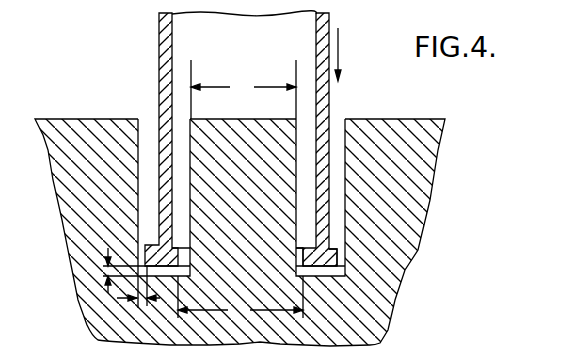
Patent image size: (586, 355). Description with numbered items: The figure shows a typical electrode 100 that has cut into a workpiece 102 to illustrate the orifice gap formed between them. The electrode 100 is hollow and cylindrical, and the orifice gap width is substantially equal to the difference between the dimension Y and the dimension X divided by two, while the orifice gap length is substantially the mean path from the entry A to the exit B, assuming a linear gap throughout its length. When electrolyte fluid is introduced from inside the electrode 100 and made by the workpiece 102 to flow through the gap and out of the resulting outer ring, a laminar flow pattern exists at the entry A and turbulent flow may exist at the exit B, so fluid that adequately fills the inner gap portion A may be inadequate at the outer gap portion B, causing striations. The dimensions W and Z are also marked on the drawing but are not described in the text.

The electrode 100 is at (159, 46).
The workpiece 102 is at (393, 131).
The entry A is at (300, 248).
The exit B is at (337, 249).
The vertical clearance dimension W is at (109, 262).
The X dimension X is at (243, 89).
The Y dimension Y is at (240, 298).
The outer clearance dimension Z is at (145, 287).